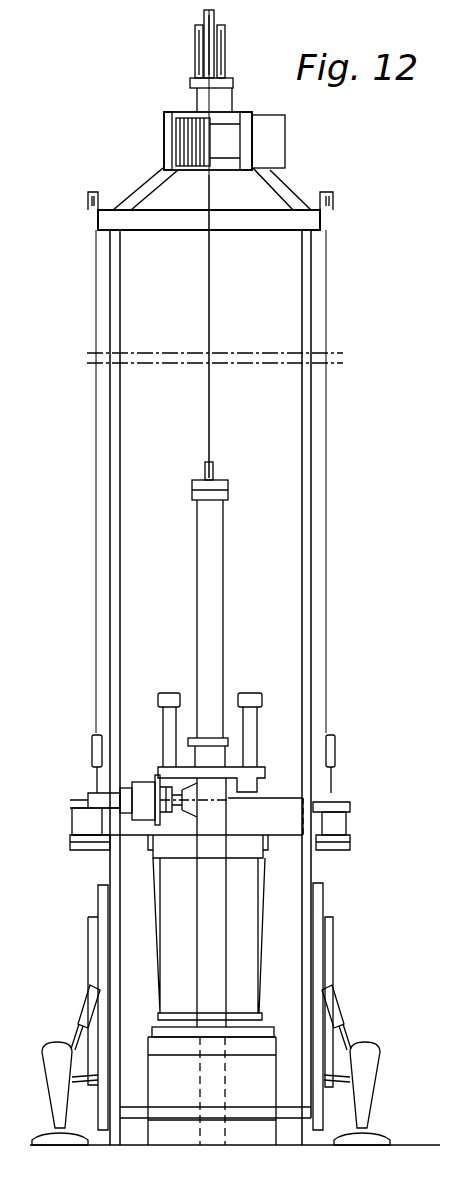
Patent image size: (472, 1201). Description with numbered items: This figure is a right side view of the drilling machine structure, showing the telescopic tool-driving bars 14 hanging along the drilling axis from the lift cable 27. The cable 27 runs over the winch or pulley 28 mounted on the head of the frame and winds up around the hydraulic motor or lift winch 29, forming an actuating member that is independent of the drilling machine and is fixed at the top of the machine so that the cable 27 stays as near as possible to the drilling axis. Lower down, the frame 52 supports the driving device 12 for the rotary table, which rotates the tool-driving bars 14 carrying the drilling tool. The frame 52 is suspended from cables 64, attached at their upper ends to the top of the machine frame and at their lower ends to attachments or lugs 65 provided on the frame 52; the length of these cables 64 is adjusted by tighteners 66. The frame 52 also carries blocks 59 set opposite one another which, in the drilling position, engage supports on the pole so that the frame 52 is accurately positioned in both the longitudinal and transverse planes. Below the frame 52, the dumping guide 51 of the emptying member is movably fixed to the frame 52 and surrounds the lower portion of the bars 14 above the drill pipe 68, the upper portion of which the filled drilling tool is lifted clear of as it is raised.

The winch 28 is at (222, 27).
The hydraulic motor 29 is at (277, 146).
The cable 27 is at (211, 297).
The tool-driving bars 14 is at (220, 614).
The cables 64 is at (96, 500).
The tighteners 66 is at (90, 755).
The attachments or lugs 65 is at (88, 806).
The blocks 59 is at (80, 825).
The driving device 12 is at (143, 812).
The frame 52 is at (290, 818).
The dumping guide 51 is at (245, 942).
The drill pipe 68 is at (268, 1043).